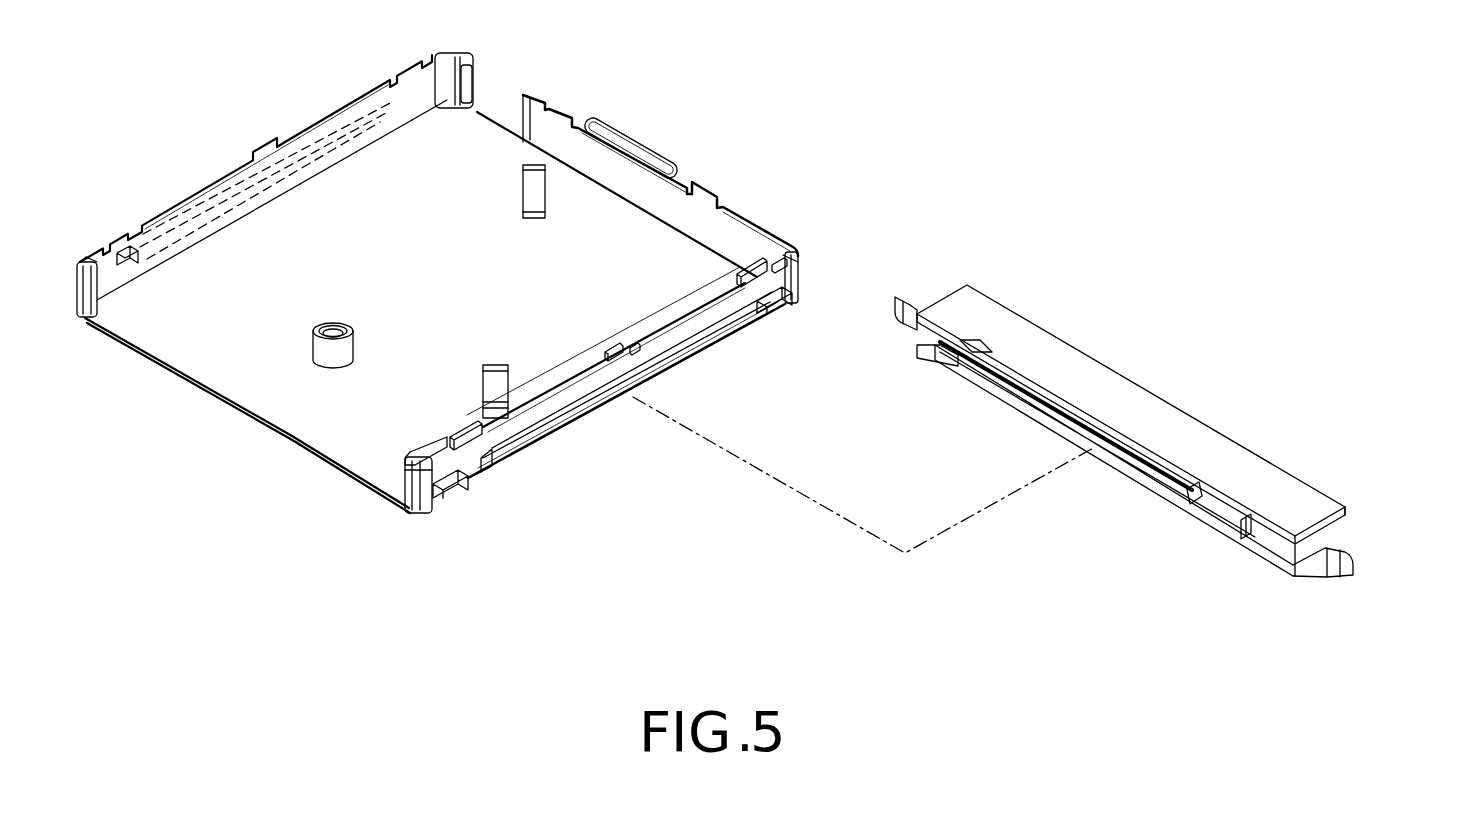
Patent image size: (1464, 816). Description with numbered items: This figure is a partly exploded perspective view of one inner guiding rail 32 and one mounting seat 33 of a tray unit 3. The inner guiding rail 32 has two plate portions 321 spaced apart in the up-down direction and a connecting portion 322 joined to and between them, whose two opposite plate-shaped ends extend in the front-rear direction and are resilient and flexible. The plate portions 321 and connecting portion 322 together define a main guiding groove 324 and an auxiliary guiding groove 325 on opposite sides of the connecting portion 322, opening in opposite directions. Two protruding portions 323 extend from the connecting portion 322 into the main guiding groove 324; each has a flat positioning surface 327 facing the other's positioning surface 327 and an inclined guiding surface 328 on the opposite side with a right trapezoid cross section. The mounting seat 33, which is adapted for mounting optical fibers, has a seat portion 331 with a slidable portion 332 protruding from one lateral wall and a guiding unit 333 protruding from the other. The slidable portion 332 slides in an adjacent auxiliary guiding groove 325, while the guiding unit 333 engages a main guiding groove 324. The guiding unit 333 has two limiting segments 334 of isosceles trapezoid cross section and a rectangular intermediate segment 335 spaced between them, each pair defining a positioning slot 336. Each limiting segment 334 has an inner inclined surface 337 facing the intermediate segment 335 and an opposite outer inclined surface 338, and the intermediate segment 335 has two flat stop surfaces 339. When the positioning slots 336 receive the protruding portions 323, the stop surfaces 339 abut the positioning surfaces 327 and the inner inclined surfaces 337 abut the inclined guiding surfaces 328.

The tray unit 3 is at (968, 203).
The inner guiding rail 32 is at (1188, 364).
The mounting seat 33 is at (697, 170).
The plate portion 321 is at (1285, 487).
The connecting portion 322 is at (1340, 565).
The protruding portion 323 is at (943, 363).
The main guiding groove 324 is at (988, 390).
The auxiliary guiding groove 325 is at (1345, 522).
The positioning surface 327 is at (985, 372).
The inclined guiding surface 328 is at (1257, 530).
The seat portion 331 is at (290, 405).
The slidable portion 332 is at (222, 203).
The guiding unit 333 is at (611, 405).
The limiting segment 334 is at (797, 263).
The intermediate segment 335 is at (573, 425).
The positioning slot 336 is at (748, 292).
The inner inclined surface 337 is at (777, 303).
The outer inclined surface 338 is at (800, 291).
The stop surface 339 is at (762, 313).